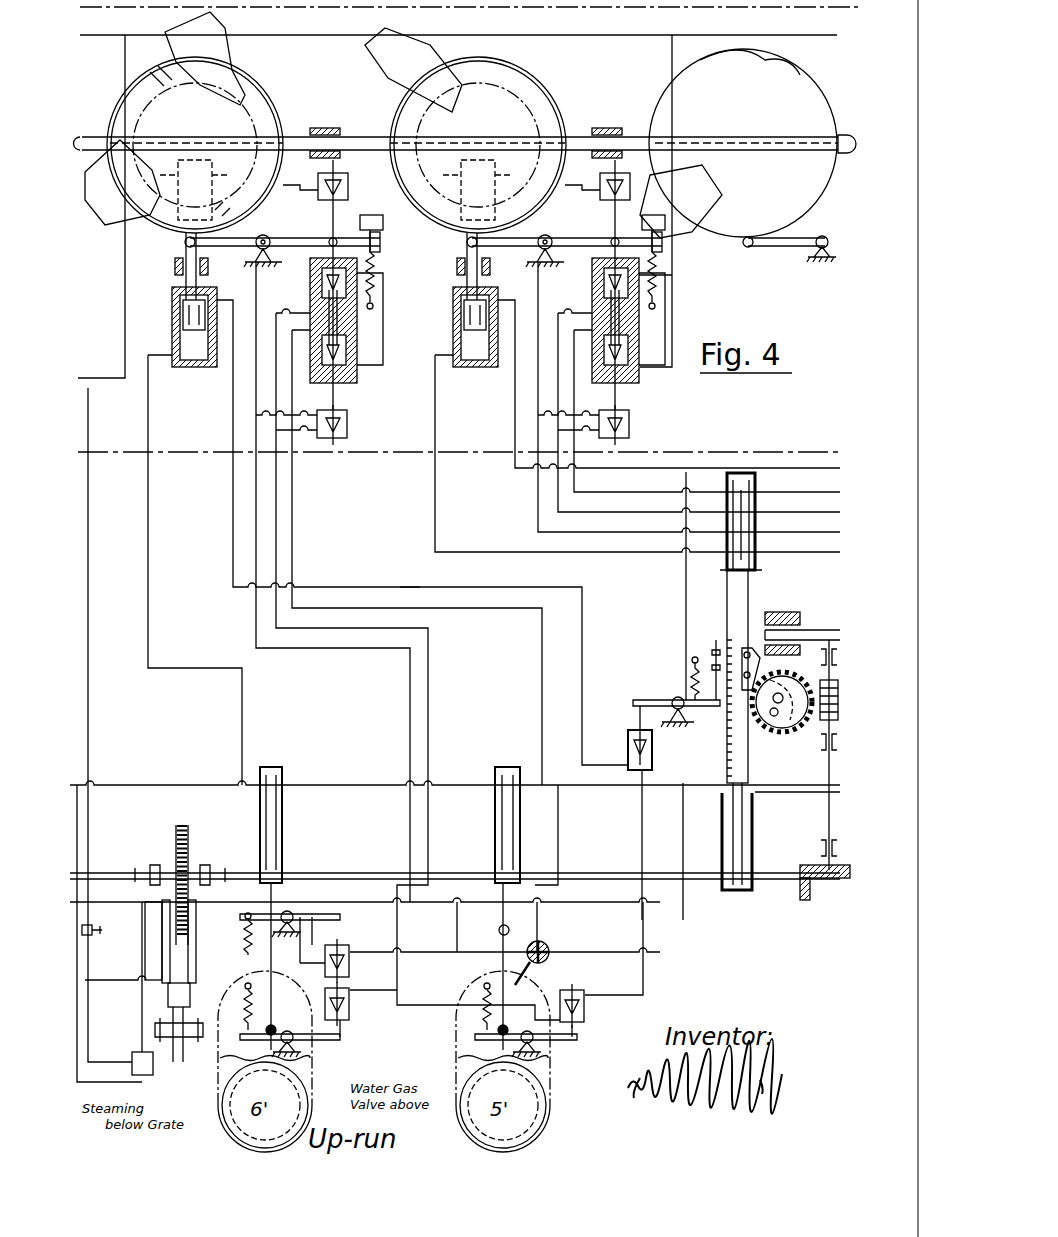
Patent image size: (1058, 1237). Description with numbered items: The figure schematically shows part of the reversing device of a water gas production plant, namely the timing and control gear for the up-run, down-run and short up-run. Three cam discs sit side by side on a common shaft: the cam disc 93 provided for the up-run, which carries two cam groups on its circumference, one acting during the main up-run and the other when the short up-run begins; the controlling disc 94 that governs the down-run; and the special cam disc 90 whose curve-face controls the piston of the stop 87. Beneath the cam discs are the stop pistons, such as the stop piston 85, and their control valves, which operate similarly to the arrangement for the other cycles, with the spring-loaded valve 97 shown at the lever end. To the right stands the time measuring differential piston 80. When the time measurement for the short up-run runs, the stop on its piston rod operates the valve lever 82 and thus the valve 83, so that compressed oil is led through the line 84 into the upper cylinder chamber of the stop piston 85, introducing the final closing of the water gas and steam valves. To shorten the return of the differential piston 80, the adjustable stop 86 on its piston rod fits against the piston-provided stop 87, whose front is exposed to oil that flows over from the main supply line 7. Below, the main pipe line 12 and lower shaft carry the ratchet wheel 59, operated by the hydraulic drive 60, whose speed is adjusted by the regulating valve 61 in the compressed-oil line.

The main supply line 7 is at (114, 378).
The main pipe line 12 is at (190, 779).
The ratchet wheel 59 is at (188, 843).
The hydraulic drive 60 is at (196, 966).
The regulating valve 61 is at (92, 928).
The time measuring differential piston 80 is at (750, 582).
The valve lever 82 is at (660, 690).
The valve 83 is at (653, 750).
The line 84 is at (402, 590).
The stop piston 85 is at (180, 306).
The adjustable stop 86 is at (740, 648).
The stop provided with a piston 87 is at (800, 632).
The cam disc 90 is at (782, 96).
The cam disc for the up-run 93 is at (262, 112).
The controlling disc for the down-run 94 is at (530, 97).
The spring-loaded valve 97 is at (383, 224).